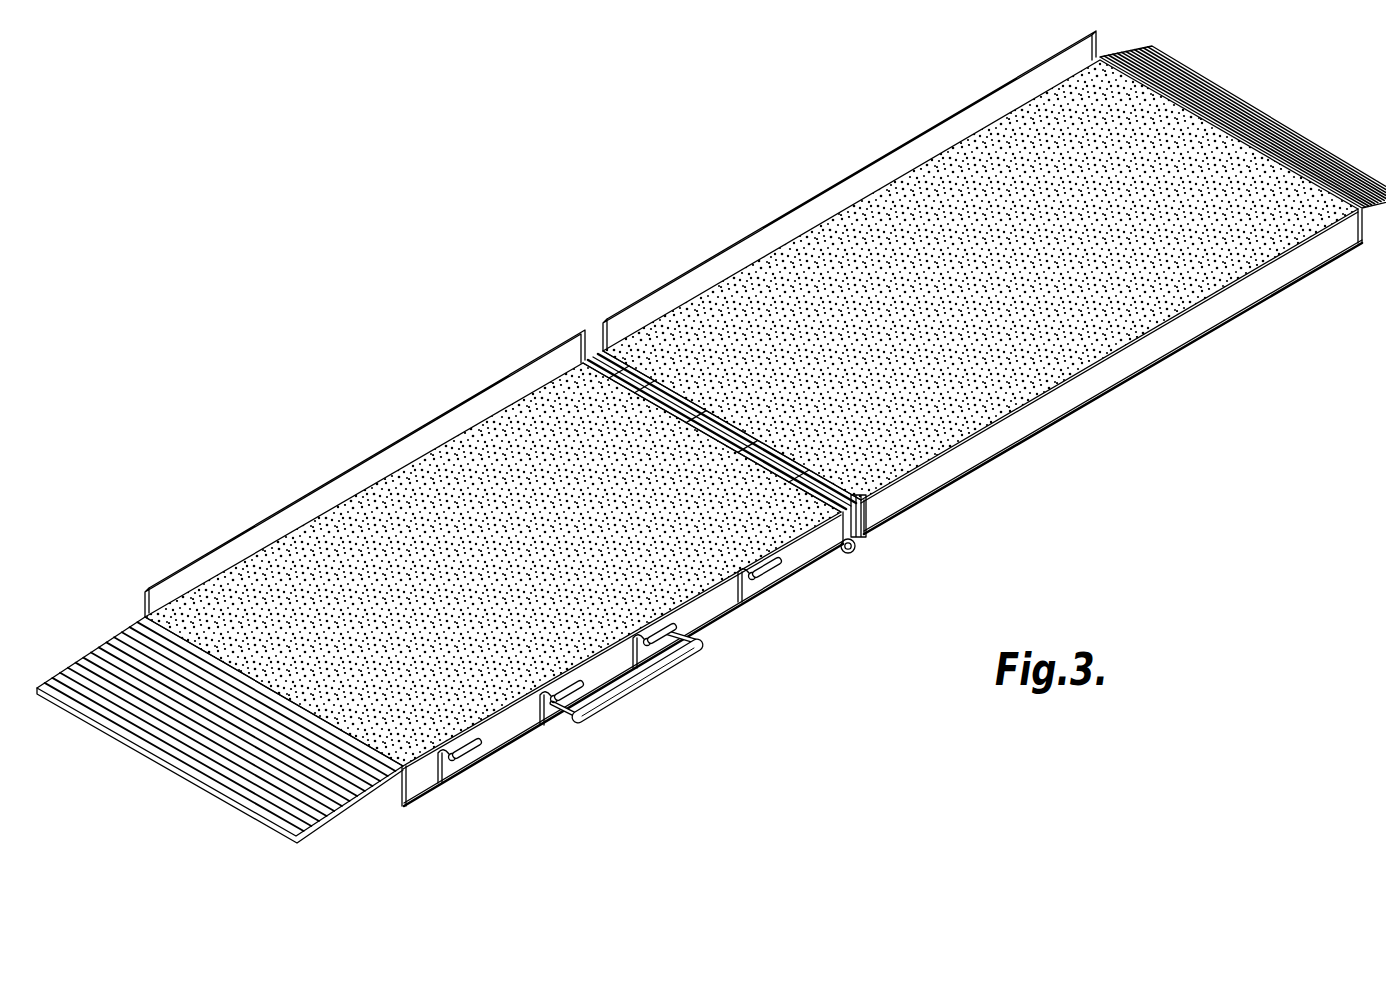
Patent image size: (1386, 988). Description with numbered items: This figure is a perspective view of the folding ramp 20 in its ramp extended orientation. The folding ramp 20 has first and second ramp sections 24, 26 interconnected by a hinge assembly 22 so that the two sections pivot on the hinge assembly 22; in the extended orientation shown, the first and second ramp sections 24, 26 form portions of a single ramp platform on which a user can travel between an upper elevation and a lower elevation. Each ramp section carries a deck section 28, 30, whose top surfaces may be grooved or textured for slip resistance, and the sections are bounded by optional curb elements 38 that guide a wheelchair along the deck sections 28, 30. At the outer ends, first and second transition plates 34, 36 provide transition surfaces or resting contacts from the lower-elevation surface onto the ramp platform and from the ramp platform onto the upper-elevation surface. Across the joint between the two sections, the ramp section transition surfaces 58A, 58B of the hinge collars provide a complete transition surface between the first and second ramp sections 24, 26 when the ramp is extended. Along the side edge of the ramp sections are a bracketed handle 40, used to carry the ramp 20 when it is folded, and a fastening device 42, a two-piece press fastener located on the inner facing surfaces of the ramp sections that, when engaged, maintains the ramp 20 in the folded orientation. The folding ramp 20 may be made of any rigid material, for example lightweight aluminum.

The folding ramp 20 is at (612, 123).
The hinge assembly 22 is at (856, 552).
The first ramp section 24 is at (1125, 363).
The second ramp section 26 is at (520, 722).
The deck section 28 is at (1157, 307).
The deck section 30 is at (672, 597).
The first transition plate 34 is at (187, 773).
The second transition plate 36 is at (1215, 84).
The curb element 38 is at (832, 187).
The bracketed handle 40 is at (647, 682).
The fastening device 42 is at (473, 770).
The ramp section transition surface 58A is at (660, 386).
The ramp section transition surface 58B is at (740, 428).